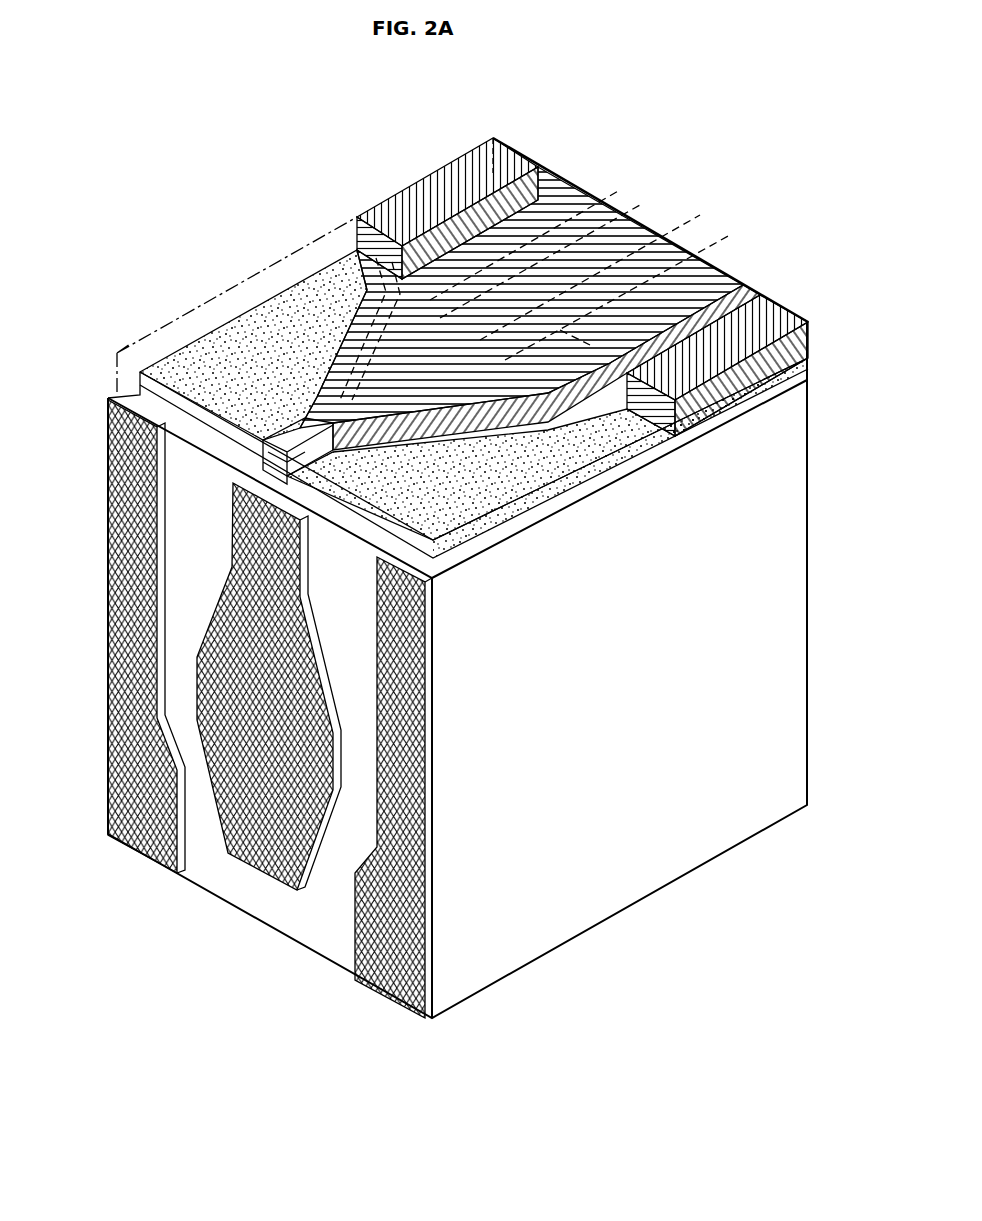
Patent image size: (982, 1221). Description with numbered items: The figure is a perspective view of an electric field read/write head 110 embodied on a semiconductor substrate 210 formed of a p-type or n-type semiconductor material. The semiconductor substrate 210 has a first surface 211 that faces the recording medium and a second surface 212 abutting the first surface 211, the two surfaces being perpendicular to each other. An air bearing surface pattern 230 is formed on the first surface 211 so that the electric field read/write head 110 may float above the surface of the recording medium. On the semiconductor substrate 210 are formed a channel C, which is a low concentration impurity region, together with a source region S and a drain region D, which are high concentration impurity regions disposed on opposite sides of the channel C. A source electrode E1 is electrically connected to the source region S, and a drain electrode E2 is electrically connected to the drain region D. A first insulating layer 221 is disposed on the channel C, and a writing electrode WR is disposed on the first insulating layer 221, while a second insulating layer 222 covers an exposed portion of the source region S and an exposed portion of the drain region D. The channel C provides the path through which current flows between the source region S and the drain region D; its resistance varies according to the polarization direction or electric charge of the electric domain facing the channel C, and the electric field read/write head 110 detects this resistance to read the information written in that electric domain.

The electric field read/write head 110 is at (752, 188).
The semiconductor substrate 210 is at (660, 842).
The first surface 211 is at (197, 568).
The second surface 212 is at (185, 425).
The first insulating layer 221 is at (263, 463).
The second insulating layer 222 is at (324, 252).
The air bearing surface pattern 230 is at (380, 923).
The source electrode E1 is at (510, 163).
The drain electrode E2 is at (780, 319).
The source region S is at (281, 296).
The drain region D is at (623, 470).
The writing electrode WR is at (640, 232).
The channel C is at (277, 480).